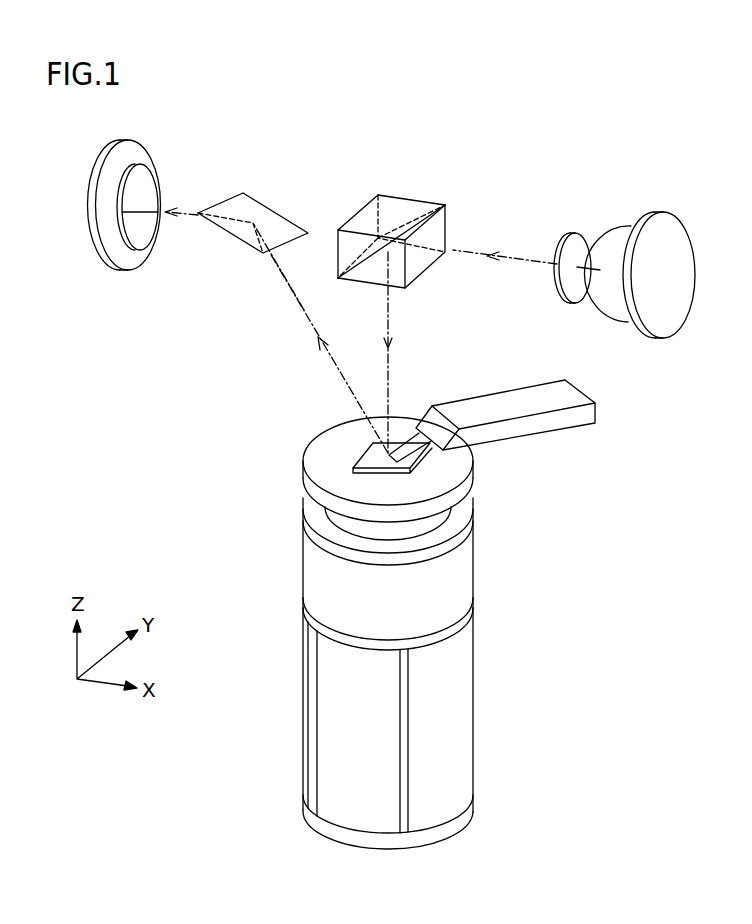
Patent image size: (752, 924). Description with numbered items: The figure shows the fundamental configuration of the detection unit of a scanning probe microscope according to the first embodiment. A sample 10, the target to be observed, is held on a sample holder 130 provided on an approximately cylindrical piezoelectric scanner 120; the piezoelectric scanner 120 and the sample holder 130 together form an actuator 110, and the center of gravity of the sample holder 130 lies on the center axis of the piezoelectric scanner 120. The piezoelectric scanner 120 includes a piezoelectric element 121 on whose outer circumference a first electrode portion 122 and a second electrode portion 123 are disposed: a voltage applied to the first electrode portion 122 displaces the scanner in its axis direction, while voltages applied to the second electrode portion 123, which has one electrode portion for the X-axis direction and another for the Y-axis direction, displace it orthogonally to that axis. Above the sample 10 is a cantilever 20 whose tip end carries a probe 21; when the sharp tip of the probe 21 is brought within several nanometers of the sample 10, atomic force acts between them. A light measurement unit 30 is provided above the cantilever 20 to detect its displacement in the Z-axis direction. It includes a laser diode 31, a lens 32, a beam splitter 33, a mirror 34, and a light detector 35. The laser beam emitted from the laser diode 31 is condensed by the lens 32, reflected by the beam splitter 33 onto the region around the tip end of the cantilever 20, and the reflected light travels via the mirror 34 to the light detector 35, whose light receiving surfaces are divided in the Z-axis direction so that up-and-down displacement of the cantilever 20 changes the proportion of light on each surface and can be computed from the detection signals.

The sample 10 is at (365, 453).
The cantilever 20 is at (427, 450).
The probe 21 is at (387, 457).
The light measurement unit 30 is at (697, 110).
The laser diode 31 is at (673, 225).
The lens 32 is at (582, 234).
The beam splitter 33 is at (412, 207).
The mirror 34 is at (270, 217).
The light detector 35 is at (153, 160).
The actuator 110 is at (592, 470).
The piezoelectric scanner 120 is at (552, 573).
The piezoelectric element 121 is at (477, 610).
The first electrode portion 122 is at (465, 583).
The second electrode portion 123 is at (465, 765).
The sample holder 130 is at (468, 483).